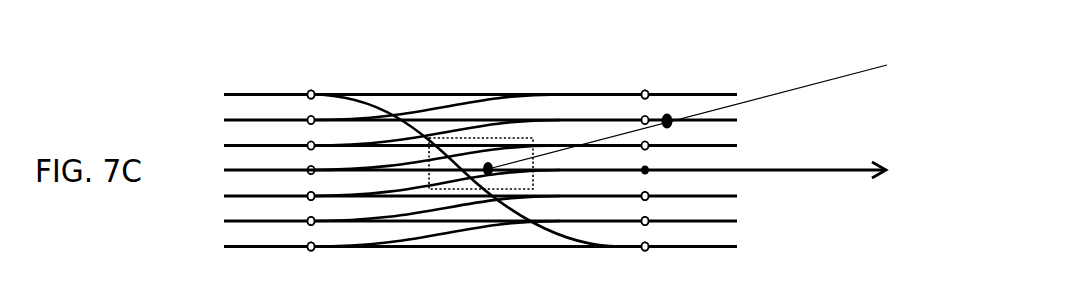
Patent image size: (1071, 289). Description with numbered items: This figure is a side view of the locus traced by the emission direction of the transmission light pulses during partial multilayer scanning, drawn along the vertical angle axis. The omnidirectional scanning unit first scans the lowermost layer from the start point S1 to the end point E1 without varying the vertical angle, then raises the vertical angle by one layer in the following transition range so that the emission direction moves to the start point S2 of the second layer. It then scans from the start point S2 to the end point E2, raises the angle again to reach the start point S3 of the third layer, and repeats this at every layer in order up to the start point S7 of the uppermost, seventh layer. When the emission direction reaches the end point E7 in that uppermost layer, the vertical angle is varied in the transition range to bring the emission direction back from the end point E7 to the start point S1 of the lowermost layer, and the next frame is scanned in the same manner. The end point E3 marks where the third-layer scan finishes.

The end point in the lowermost layer E1 is at (306, 259).
The end point in the second layer E2 is at (300, 230).
The end point in the third layer E3 is at (300, 205).
The end point in the uppermost layer E7 is at (303, 78).
The start point in the lowermost layer S1 is at (650, 263).
The start point in the second layer S2 is at (657, 230).
The start point in the third layer S3 is at (657, 206).
The start point in the uppermost layer S7 is at (650, 77).